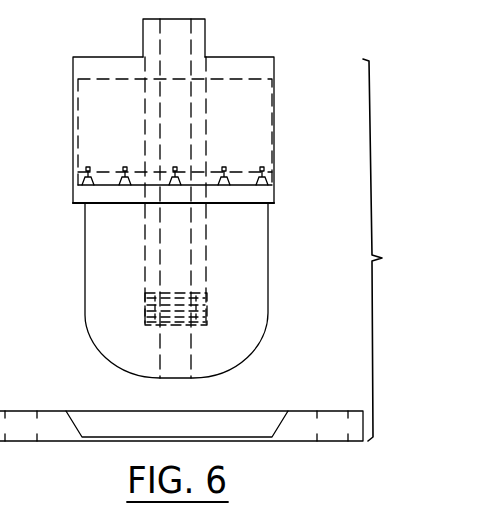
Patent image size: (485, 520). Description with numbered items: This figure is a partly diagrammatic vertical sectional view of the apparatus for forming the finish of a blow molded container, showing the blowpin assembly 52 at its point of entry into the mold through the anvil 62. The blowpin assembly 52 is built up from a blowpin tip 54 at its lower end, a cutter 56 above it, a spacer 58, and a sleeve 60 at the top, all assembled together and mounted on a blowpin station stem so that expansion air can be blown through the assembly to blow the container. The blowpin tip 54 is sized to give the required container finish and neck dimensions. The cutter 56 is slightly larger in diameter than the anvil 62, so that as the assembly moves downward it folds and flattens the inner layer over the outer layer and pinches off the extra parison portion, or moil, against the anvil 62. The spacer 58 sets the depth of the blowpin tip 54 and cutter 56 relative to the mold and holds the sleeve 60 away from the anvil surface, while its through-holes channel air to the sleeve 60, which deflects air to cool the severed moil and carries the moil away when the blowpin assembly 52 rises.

The sleeve 60 is at (73, 57).
The spacer 58 is at (88, 114).
The blowpin assembly 52 is at (80, 178).
The cutter 56 is at (86, 206).
The blowpin tip 54 is at (85, 312).
The anvil 62 is at (293, 417).